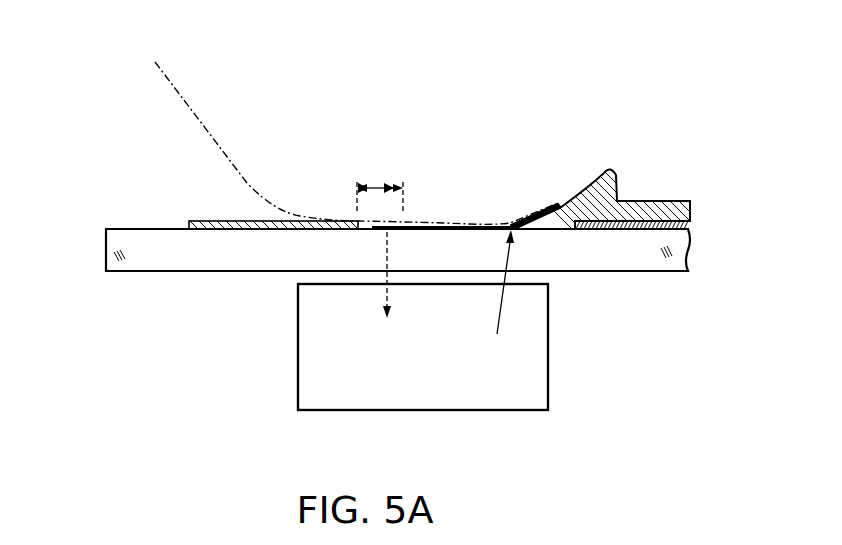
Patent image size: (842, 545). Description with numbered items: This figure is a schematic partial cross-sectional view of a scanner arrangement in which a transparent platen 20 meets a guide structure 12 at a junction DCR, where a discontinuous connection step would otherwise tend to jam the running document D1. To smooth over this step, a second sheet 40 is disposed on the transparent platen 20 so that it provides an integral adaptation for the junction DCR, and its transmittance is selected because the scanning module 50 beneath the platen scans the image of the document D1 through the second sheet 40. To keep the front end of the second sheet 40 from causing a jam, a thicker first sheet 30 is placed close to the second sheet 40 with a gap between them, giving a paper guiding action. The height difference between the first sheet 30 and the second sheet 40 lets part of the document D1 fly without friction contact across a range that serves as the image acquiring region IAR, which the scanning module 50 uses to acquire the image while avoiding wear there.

The transparent platen 20 is at (125, 245).
The first sheet 30 is at (238, 229).
The second sheet 40 is at (530, 229).
The guide structure 12 is at (562, 229).
The scanning module 50 is at (548, 394).
The document D1 is at (173, 88).
The image acquiring region IAR is at (380, 237).
The junction DCR is at (502, 294).